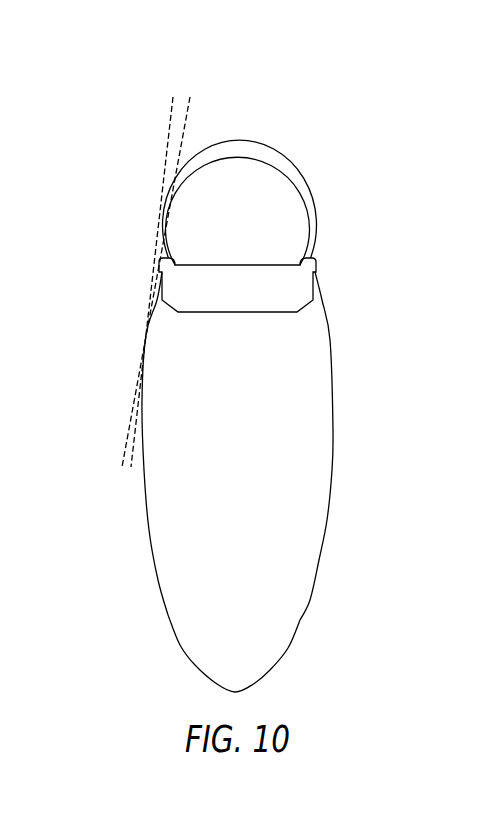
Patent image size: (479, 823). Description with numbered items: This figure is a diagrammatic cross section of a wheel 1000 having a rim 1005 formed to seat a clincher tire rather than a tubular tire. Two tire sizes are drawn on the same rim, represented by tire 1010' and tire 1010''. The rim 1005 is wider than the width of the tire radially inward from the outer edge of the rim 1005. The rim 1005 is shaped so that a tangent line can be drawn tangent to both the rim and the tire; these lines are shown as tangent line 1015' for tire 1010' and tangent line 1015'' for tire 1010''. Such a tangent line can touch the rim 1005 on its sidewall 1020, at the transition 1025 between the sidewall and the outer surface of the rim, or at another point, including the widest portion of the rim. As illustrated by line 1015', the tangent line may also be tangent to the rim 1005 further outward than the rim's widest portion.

The wheel 1000 is at (368, 72).
The rim 1005 is at (331, 418).
The tire 1010' is at (291, 211).
The tire 1010'' is at (281, 198).
The tangent line 1015' is at (206, 282).
The tangent line 1015'' is at (120, 282).
The sidewall 1020 is at (291, 646).
The transition 1025 is at (162, 262).